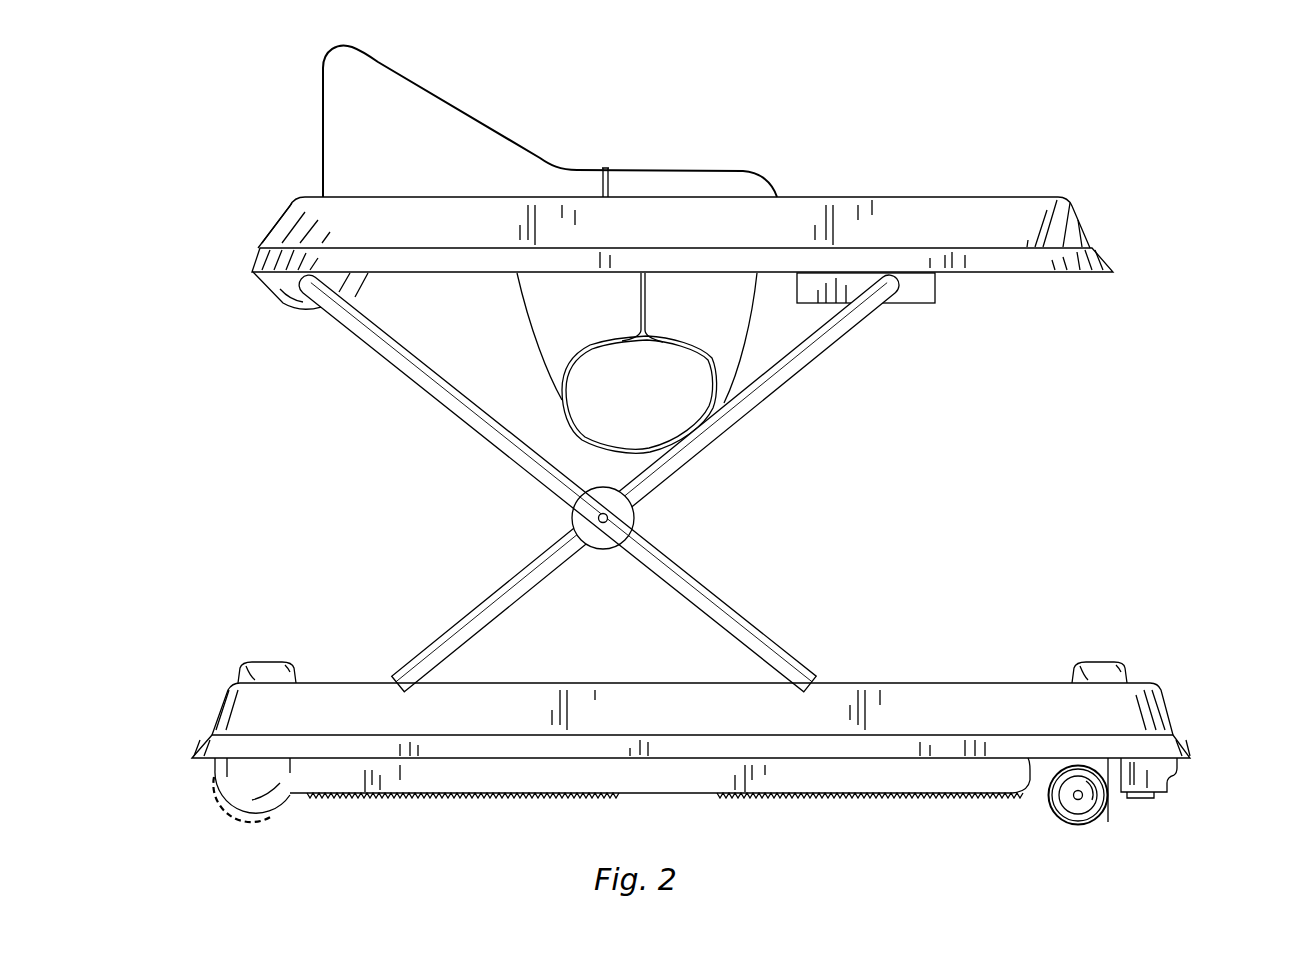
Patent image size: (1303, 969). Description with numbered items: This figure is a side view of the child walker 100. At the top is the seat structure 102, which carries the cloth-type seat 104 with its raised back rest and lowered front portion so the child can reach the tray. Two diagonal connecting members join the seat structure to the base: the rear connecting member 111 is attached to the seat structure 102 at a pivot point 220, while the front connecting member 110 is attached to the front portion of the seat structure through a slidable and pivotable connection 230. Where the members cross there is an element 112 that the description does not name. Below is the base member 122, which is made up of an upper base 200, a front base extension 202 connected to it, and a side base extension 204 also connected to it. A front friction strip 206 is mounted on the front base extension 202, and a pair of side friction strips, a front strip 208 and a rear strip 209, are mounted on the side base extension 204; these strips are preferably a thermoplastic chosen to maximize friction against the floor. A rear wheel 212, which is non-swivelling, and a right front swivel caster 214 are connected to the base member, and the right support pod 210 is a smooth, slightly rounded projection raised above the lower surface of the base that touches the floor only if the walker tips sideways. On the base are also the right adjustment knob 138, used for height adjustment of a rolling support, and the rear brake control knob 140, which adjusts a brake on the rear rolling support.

The child walker 100 is at (233, 517).
The seat structure 102 is at (645, 243).
The cloth-type seat 104 is at (412, 80).
The front connecting member 110 is at (777, 392).
The rear connecting member 111 is at (772, 635).
The pivot hub 112 is at (637, 518).
The base member 122 is at (739, 733).
The right adjustment knob 138 is at (1100, 662).
The rear brake control knob 140 is at (297, 661).
The upper base 200 is at (1175, 700).
The front base extension 202 is at (1170, 780).
The side base extension 204 is at (675, 794).
The front friction strip 206 is at (1143, 799).
The front side friction strip 208 is at (927, 798).
The rear side friction strip 209 is at (507, 798).
The right support pod 210 is at (290, 799).
The rear wheel 212 is at (223, 823).
The right front swivel caster 214 is at (1082, 825).
The pivot point 220 is at (262, 300).
The slidable and pivotable connection 230 is at (922, 312).